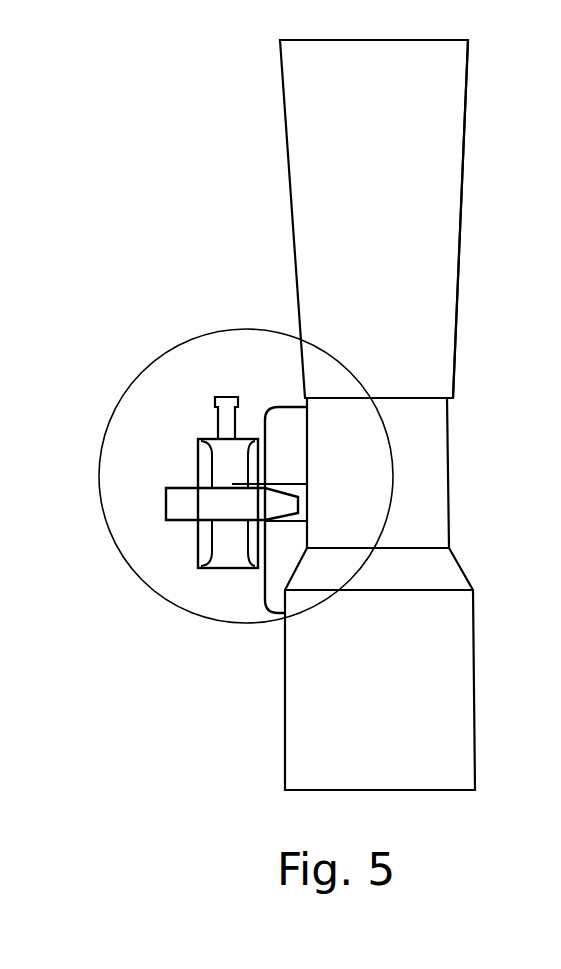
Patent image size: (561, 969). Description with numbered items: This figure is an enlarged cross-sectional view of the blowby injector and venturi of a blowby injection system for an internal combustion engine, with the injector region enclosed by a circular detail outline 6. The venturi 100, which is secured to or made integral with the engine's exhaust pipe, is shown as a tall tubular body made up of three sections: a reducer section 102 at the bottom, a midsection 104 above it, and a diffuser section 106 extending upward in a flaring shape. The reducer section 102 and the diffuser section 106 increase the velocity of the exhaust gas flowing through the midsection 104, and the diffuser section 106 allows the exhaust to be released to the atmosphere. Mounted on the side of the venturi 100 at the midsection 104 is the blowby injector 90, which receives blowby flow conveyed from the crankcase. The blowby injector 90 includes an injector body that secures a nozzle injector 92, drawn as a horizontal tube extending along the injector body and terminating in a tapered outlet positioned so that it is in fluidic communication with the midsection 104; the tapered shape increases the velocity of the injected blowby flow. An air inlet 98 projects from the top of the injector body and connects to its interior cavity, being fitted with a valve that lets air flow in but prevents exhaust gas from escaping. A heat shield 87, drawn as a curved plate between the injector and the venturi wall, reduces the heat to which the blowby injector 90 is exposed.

The detail region of roller assembly 6 is at (140, 586).
The heat shield 87 is at (287, 403).
The blowby injector 90 is at (209, 591).
The nozzle injector 92 is at (178, 487).
The air inlet 98 is at (239, 396).
The venturi 100 is at (450, 124).
The reducer section 102 is at (449, 568).
The midsection 104 is at (435, 486).
The diffuser section 106 is at (437, 274).